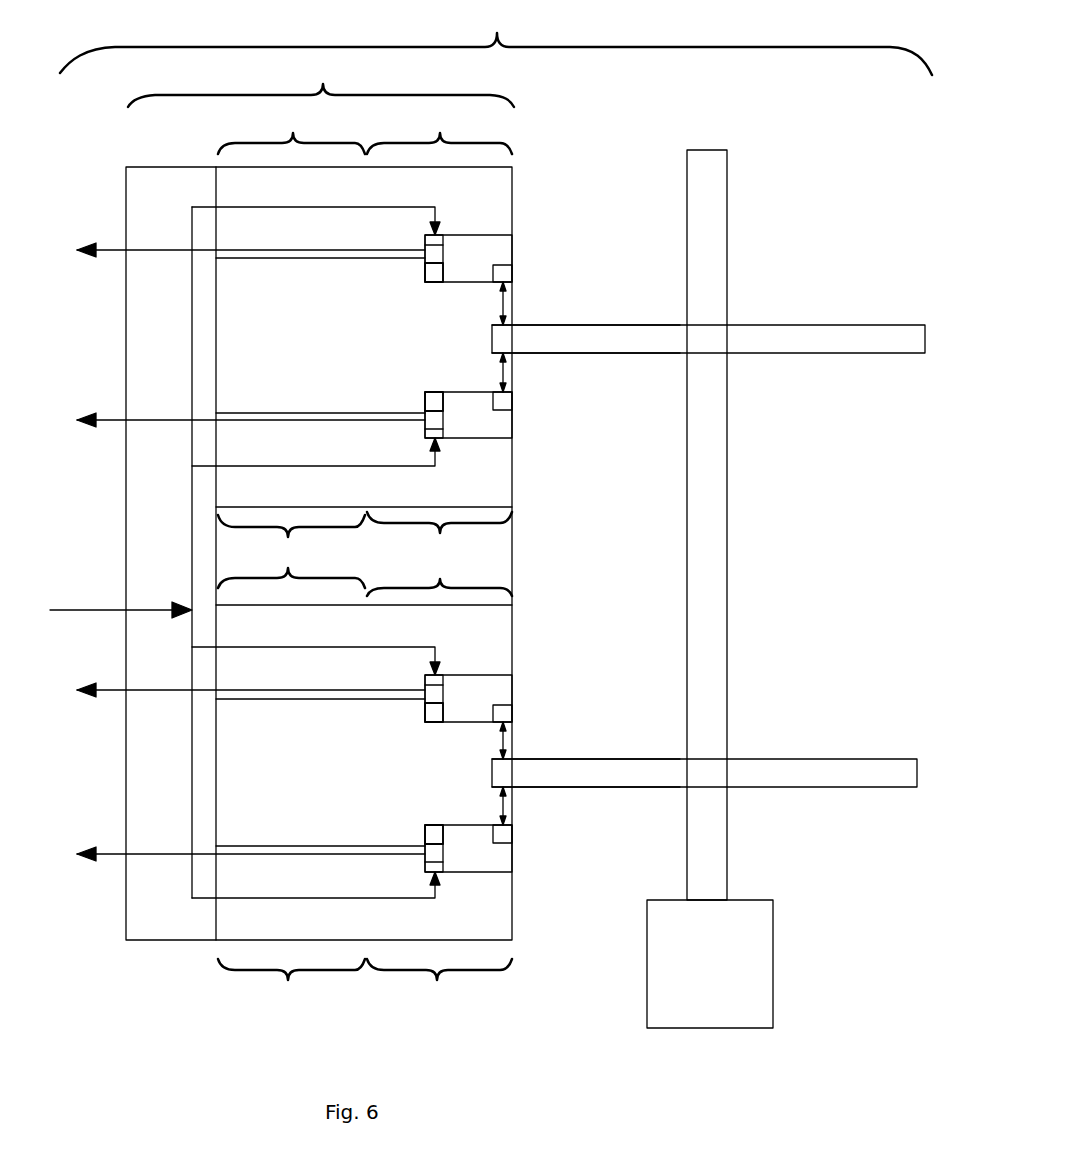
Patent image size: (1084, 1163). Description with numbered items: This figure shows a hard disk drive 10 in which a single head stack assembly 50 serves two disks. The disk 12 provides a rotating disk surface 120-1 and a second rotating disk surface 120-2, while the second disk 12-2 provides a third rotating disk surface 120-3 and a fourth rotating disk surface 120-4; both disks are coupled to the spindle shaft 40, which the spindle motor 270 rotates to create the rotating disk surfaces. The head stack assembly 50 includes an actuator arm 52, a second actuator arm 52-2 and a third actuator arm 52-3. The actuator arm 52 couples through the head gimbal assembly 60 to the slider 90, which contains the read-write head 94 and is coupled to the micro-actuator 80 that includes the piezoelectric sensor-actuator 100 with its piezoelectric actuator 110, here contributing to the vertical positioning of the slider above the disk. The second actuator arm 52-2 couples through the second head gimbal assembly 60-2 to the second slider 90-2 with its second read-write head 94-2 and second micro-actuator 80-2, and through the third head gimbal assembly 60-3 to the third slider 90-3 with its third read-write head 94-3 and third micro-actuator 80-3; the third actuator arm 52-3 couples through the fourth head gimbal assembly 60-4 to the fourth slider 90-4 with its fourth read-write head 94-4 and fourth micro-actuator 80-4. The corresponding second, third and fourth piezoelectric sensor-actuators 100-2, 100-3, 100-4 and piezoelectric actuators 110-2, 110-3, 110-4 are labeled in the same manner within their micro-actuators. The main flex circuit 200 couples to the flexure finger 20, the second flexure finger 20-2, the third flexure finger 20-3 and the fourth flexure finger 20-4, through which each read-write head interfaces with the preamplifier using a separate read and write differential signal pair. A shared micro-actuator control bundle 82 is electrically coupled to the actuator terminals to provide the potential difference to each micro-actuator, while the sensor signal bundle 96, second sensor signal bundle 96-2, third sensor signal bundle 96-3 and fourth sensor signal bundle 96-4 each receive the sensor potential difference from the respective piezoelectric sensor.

The hard disk drive 10 is at (496, 41).
The head stack assembly 50 is at (321, 83).
The actuator arm 52 is at (291, 132).
The head gimbal assembly 60 is at (439, 132).
The micro-actuator control bundle 82 is at (352, 207).
The piezoelectric actuator 110 is at (425, 240).
The slider 90 is at (512, 247).
The read-write head 94 is at (512, 283).
The sensor signal bundle 96 is at (118, 254).
The flexure finger 20 is at (317, 259).
The micro-actuator 80 is at (425, 270).
The piezoelectric sensor-actuator 100 is at (408, 286).
The rotating disk surface 120-1 is at (598, 325).
The second rotating disk surface 120-2 is at (598, 353).
The disk 12 is at (708, 340).
The spindle shaft 40 is at (710, 148).
The second micro-actuator 80-2 is at (425, 401).
The sensor 100-2 is at (425, 375).
The second flexure finger 20-2 is at (317, 413).
The actuator 110-2 is at (425, 432).
The second read-write head 94-2 is at (512, 393).
The second slider 90-2 is at (512, 435).
The second sensor signal bundle 96-2 is at (117, 423).
The second actuator arm 52-2 is at (291, 551).
The second head gimbal assembly 60-2 is at (439, 532).
The third head gimbal assembly 60-3 is at (439, 577).
The actuator 110-3 is at (425, 680).
The third slider 90-3 is at (512, 688).
The third read-write head 94-3 is at (512, 722).
The third sensor signal bundle 96-3 is at (118, 695).
The third flexure finger 20-3 is at (317, 700).
The third micro-actuator 80-3 is at (425, 712).
The sensor 100-3 is at (427, 731).
The third rotating disk surface 120-3 is at (598, 759).
The fourth rotating disk surface 120-4 is at (598, 787).
The second disk 12-2 is at (704, 773).
The fourth micro-actuator 80-4 is at (425, 836).
The sensor 100-4 is at (425, 807).
The fourth flexure finger 20-4 is at (317, 846).
The actuator 110-4 is at (425, 864).
The fourth read-write head 94-4 is at (512, 826).
The fourth slider 90-4 is at (512, 870).
The fourth sensor signal bundle 96-4 is at (117, 860).
The third actuator arm 52-3 is at (291, 984).
The fourth head gimbal assembly 60-4 is at (439, 984).
The main flex circuit 200 is at (194, 936).
The spindle motor 270 is at (773, 930).